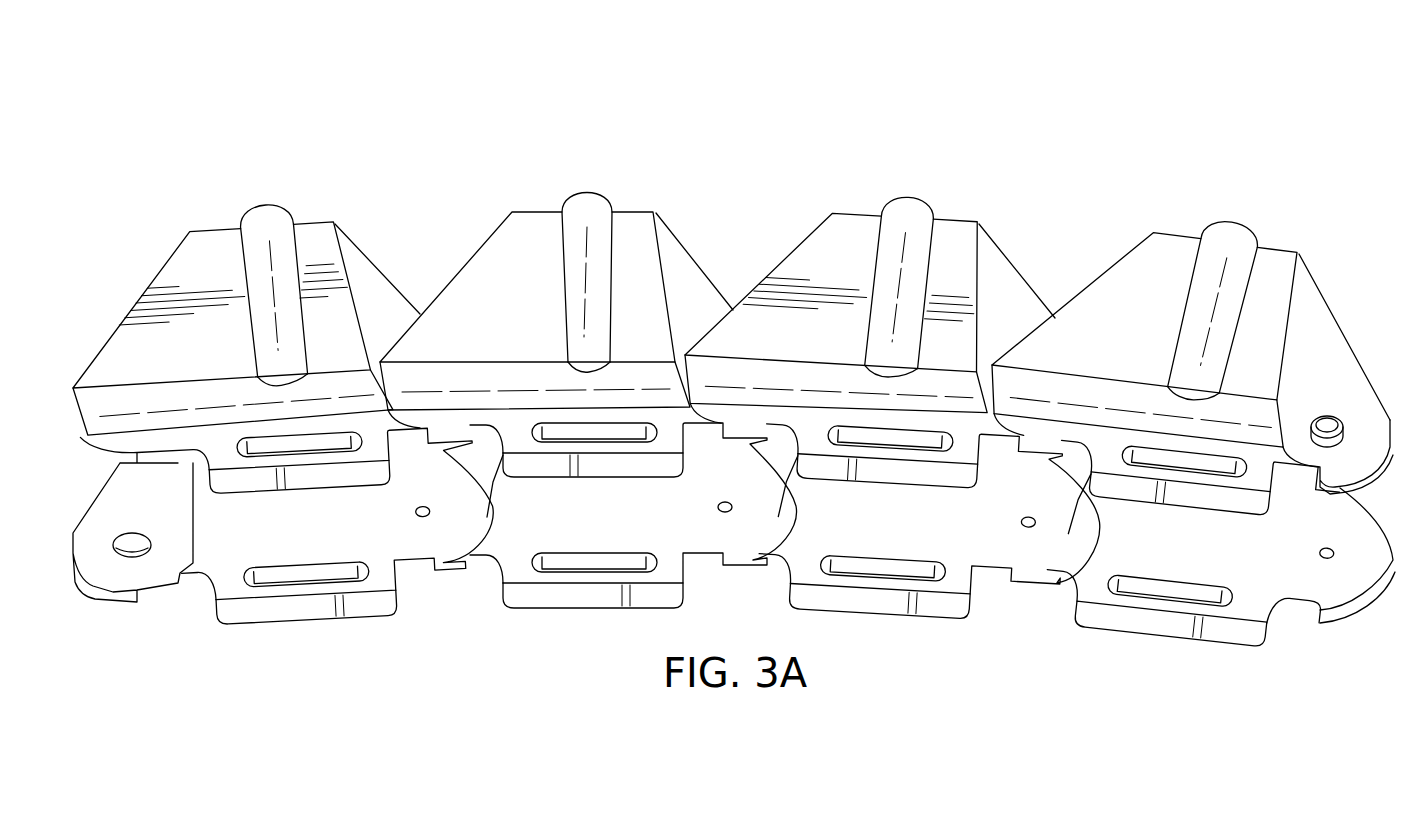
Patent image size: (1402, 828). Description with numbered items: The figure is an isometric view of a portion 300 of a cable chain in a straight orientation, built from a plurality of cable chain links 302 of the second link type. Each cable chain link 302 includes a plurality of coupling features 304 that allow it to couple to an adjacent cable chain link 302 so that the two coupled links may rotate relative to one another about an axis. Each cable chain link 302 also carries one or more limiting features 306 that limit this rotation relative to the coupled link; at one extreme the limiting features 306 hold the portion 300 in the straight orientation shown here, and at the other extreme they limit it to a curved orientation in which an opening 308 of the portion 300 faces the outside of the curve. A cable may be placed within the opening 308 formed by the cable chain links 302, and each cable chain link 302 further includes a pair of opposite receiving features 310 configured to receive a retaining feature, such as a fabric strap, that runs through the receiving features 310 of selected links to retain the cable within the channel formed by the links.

The portion of cable chain 300 is at (609, 109).
The cable chain link 302 is at (215, 222).
The coupling feature 304 is at (137, 540).
The limiting feature 306 is at (346, 261).
The opening 308 is at (747, 512).
The receiving feature 310 is at (318, 448).